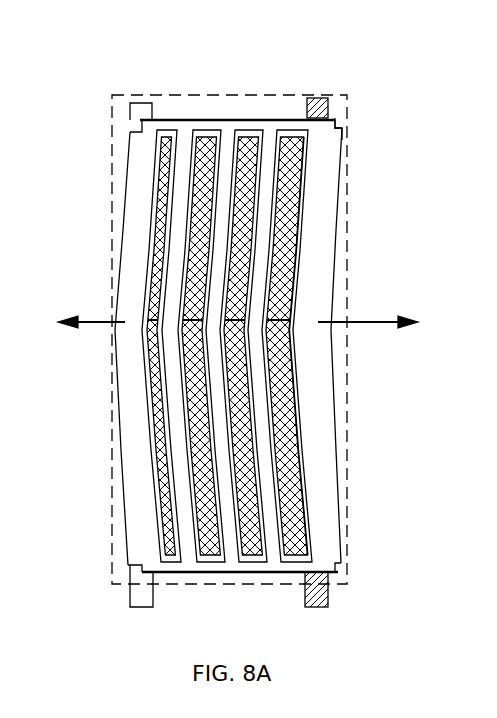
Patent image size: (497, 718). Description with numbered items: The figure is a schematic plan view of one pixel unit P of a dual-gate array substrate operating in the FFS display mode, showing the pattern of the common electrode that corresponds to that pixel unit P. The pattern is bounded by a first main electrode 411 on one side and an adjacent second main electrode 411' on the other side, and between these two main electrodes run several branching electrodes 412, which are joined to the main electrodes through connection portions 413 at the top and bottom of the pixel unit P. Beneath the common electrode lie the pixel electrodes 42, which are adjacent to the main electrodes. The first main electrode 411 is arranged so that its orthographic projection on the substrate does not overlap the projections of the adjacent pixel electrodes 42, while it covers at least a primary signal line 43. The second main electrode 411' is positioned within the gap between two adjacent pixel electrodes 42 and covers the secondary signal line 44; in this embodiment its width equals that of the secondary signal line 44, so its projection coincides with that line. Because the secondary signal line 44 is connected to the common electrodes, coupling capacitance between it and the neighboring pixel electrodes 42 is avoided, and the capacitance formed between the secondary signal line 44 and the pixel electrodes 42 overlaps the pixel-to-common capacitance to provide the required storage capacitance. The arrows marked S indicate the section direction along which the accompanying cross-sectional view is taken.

The primary signal line 43 is at (142, 110).
The secondary signal line 44 is at (322, 112).
The connection portion 413 is at (340, 112).
The pixel unit P is at (349, 179).
The first main electrode 411 is at (192, 346).
The second main electrode 411' is at (364, 345).
The pixel electrode 42 is at (287, 443).
The branching electrode 412 is at (262, 497).
The shear direction S is at (240, 323).